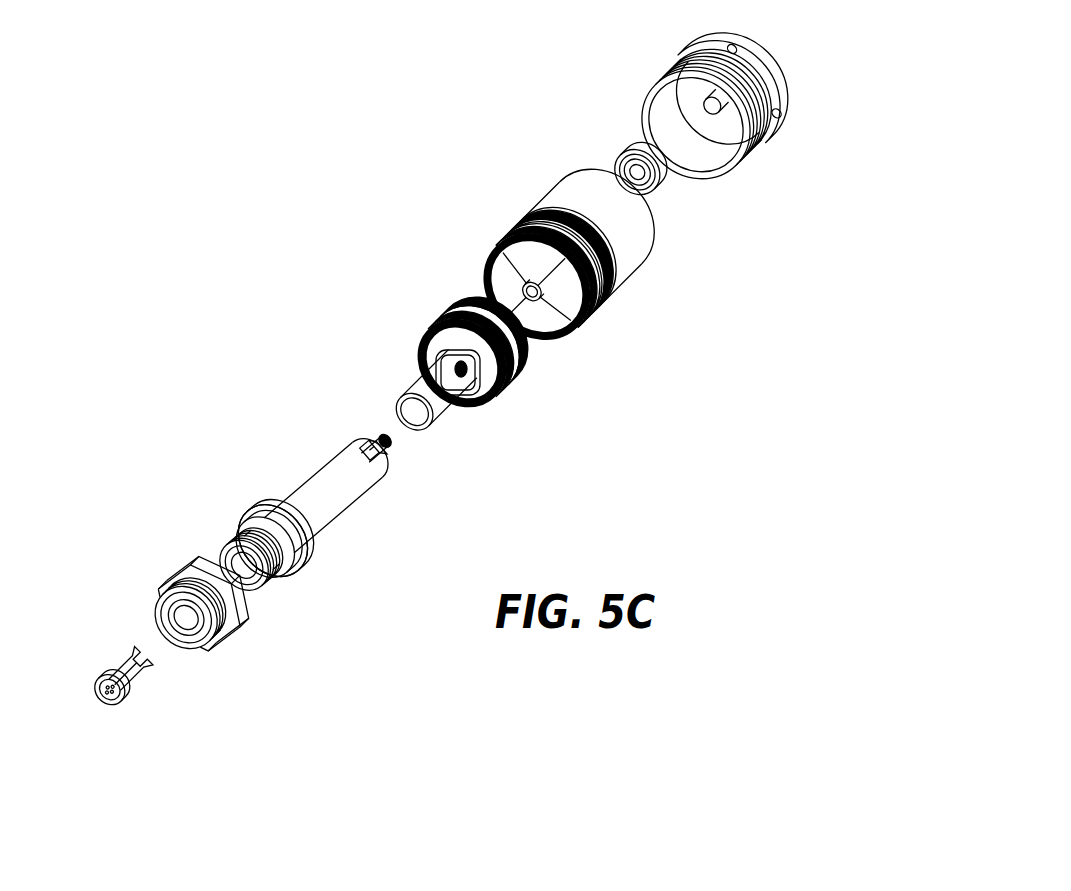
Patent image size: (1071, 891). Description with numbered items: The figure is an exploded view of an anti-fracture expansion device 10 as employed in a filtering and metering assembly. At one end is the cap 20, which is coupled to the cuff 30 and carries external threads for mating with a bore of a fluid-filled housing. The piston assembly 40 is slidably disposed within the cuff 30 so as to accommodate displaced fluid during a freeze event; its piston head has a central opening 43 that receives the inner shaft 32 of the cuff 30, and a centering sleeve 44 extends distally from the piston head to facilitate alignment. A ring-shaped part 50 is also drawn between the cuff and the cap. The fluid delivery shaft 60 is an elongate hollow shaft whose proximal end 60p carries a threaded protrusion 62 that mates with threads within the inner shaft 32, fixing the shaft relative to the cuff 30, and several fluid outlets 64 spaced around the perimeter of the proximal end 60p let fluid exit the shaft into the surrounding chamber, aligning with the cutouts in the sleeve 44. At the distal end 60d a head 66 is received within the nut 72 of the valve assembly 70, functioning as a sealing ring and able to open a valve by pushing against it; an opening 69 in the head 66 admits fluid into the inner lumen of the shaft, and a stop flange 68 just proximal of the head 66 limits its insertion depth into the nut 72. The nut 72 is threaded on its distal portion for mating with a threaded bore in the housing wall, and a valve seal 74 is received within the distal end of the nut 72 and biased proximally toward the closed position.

The anti-fracture expansion device 10 is at (248, 160).
The cap 20 is at (638, 48).
The cuff 30 is at (498, 197).
The inner shaft 32 is at (556, 296).
The piston assembly 40 is at (384, 318).
The central opening 43 is at (476, 394).
The sleeve 44 is at (446, 418).
The seal ring 50 is at (606, 147).
The fluid delivery shaft 60 is at (264, 448).
The proximal end 60p is at (403, 462).
The distal end 60d is at (298, 588).
The threaded protrusion 62 is at (386, 430).
The fluid outlets 64 is at (366, 440).
The head 66 is at (273, 584).
The stop flange 68 is at (262, 508).
The opening 69 is at (245, 552).
The valve assembly 70 is at (178, 533).
The nut 72 is at (228, 642).
The valve seal 74 is at (139, 718).